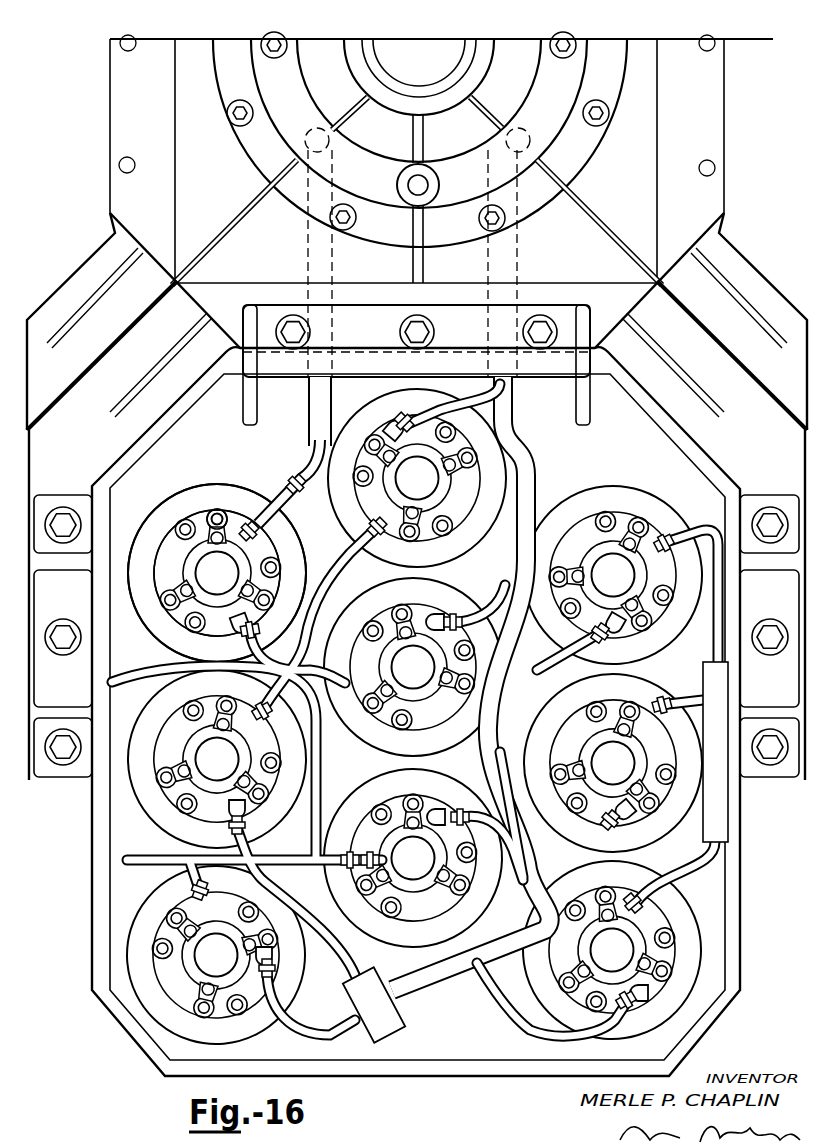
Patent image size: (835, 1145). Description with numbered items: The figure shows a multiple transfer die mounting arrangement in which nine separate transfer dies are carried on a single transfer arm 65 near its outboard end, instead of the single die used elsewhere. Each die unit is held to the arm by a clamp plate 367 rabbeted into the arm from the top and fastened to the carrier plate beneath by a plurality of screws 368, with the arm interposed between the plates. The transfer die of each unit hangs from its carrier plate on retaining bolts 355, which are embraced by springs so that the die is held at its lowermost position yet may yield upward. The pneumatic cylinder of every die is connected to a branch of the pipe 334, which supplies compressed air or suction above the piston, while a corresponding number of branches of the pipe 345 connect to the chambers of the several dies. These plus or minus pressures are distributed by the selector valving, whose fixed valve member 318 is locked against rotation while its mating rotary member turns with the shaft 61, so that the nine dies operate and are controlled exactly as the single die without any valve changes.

The shaft 61 is at (385, 48).
The fixed valve member 318 is at (650, 20).
The transfer arm 65 is at (727, 206).
The clamp plate 367 is at (218, 483).
The pipe or duct 334 is at (284, 464).
The screws 368 is at (211, 508).
The retaining bolts 355 is at (184, 525).
The pipe or duct 345 is at (182, 664).